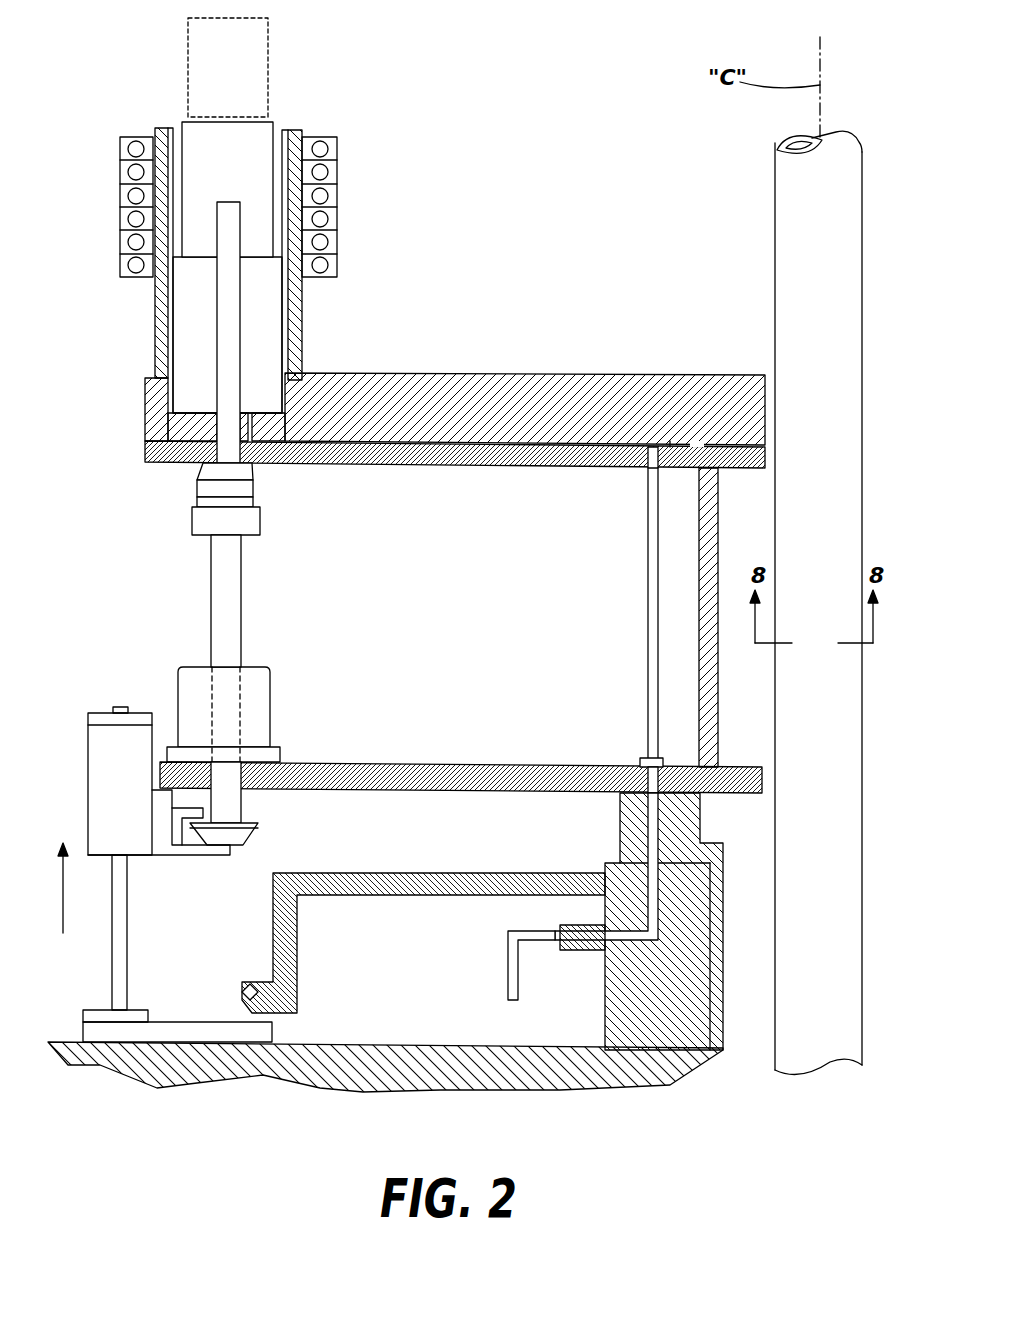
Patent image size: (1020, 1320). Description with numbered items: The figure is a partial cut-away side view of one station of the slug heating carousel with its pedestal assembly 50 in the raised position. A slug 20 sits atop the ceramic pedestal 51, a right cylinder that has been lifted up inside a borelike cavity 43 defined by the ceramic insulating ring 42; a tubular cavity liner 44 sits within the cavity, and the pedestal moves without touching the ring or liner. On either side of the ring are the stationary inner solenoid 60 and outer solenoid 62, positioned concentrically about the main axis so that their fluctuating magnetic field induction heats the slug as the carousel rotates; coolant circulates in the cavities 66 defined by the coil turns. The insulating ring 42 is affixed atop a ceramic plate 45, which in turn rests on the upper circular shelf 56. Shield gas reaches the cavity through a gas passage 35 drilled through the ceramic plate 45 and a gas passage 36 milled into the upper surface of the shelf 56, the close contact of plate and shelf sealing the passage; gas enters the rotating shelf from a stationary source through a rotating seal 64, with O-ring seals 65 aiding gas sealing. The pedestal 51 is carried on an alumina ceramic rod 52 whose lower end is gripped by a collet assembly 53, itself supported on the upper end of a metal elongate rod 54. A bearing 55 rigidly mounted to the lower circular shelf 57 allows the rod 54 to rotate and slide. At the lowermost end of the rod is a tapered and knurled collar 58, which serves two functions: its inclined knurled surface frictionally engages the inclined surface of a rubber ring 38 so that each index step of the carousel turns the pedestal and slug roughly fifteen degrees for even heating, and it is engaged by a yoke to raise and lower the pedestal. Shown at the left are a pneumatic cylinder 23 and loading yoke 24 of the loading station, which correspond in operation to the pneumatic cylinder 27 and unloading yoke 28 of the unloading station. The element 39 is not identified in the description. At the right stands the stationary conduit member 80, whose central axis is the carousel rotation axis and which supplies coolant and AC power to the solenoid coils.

The slug 20 is at (250, 72).
The ceramic pedestal 51 is at (262, 143).
The cavity liner 44 is at (177, 126).
The outer solenoid 62 is at (121, 143).
The coolant cavity 66 is at (138, 173).
The inner solenoid 60 is at (333, 143).
The ceramic insulating ring 42 is at (155, 302).
The cavity 43 is at (255, 327).
The ceramic rod 52 is at (223, 380).
The O-ring seal 65 is at (160, 438).
The ceramic plate 45 is at (410, 392).
The gas passage 36 is at (365, 447).
The upper circular shelf 56 is at (495, 458).
The gas passage 35 is at (258, 427).
The collet assembly 53 is at (197, 515).
The metal elongate rod 54 is at (226, 590).
The bearing 55 is at (257, 725).
The pedestal assembly 50 is at (220, 612).
The lower circular shelf 57 is at (408, 771).
The tapered and knurled collar 58 is at (238, 830).
The pneumatic cylinder 23 is at (151, 861).
The pneumatic cylinder 27 is at (107, 757).
The loading yoke 24 is at (159, 857).
The unloading yoke 28 is at (197, 850).
The rubber ring 38 is at (246, 988).
The housing 39 is at (458, 922).
The rotating seal 64 is at (643, 858).
The conduit member 80 is at (803, 253).